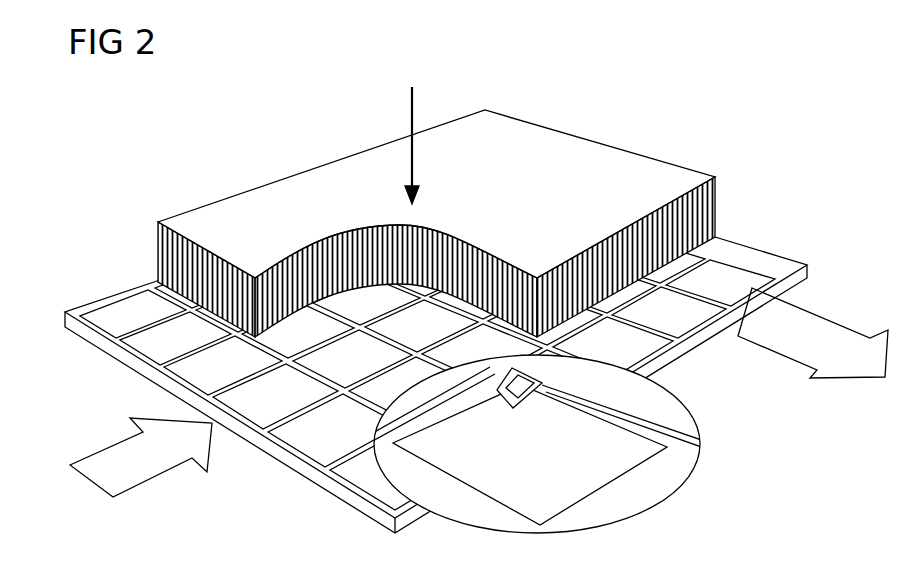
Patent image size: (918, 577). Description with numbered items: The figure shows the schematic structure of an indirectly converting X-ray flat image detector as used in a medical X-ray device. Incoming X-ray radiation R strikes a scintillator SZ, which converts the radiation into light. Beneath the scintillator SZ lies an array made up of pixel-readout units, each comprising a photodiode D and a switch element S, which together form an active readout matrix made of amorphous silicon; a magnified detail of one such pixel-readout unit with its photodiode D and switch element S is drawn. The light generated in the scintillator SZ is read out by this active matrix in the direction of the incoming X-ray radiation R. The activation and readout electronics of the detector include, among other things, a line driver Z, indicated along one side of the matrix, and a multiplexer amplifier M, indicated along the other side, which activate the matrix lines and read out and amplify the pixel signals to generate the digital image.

The incoming X-ray radiation R is at (408, 106).
The scintillator SZ is at (583, 152).
The multiplexer amplifier M is at (845, 338).
The line driver Z is at (142, 475).
The switch element S is at (527, 388).
The photodiode D is at (607, 472).